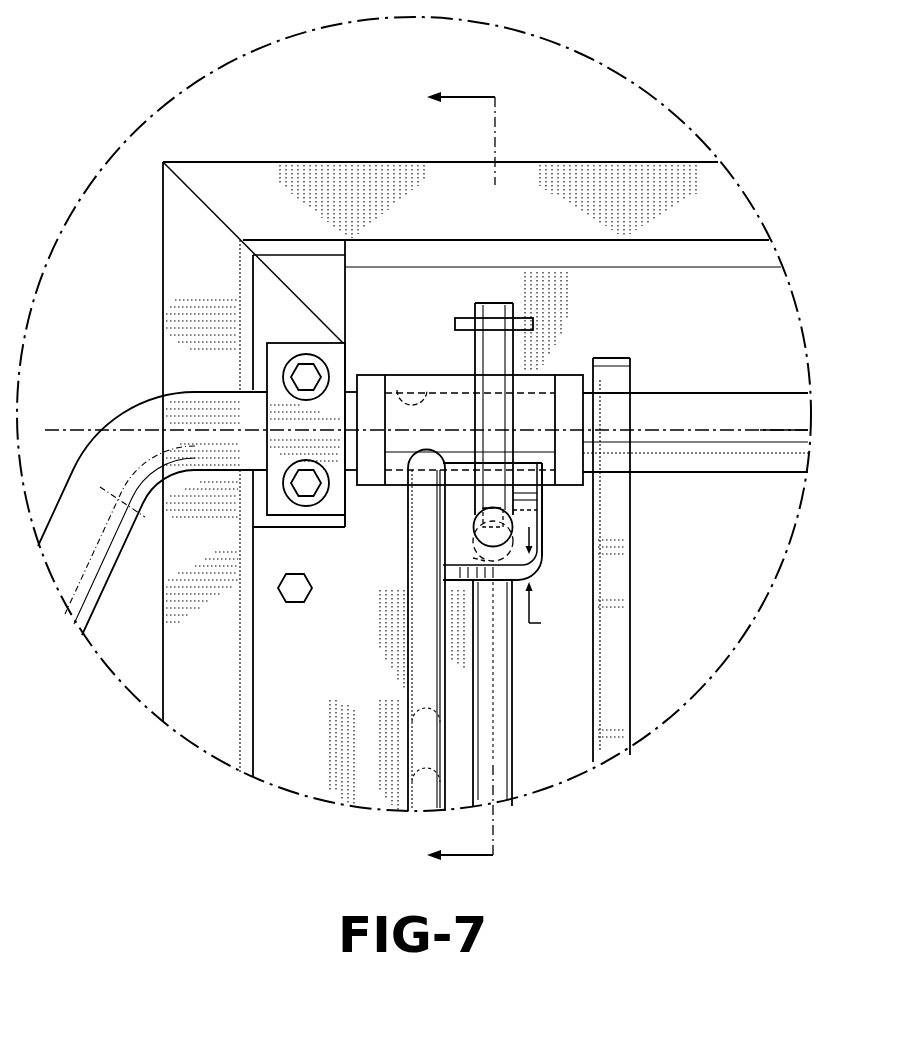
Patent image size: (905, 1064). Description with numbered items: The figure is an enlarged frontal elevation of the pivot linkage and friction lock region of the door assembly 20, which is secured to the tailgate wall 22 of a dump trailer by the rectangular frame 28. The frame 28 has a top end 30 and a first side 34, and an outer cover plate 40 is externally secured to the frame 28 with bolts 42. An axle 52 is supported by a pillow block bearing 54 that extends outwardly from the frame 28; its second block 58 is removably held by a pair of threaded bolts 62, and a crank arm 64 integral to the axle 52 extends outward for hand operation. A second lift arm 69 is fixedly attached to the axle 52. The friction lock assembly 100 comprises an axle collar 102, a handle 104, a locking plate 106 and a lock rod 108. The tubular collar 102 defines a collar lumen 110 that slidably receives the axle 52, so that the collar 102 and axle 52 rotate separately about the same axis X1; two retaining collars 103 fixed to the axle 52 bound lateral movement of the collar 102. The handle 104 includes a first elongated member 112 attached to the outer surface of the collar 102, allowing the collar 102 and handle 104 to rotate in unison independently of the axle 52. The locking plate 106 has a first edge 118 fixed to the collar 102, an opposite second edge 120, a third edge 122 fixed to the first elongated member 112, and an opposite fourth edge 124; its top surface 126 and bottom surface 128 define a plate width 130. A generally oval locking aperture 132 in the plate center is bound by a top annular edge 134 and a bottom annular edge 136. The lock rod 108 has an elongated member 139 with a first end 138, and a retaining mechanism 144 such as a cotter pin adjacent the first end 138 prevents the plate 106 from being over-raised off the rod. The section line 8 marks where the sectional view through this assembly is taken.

The door assembly 20 is at (263, 133).
The tailgate wall 22 is at (303, 104).
The section line 8- 8 is at (449, 478).
The top end 30 is at (529, 165).
The first side 34 is at (163, 281).
The frame 28 is at (158, 343).
The pillow block bearing 54 is at (288, 342).
The second block 58 is at (275, 492).
The threaded bolts 62 is at (296, 373).
The bolts 42 is at (302, 596).
The crank arm 64 is at (108, 567).
The axle 52 is at (708, 393).
The axis X1 is at (770, 430).
The axle collar 102 is at (530, 374).
The retaining collars 103 is at (376, 375).
The collar lumen 110 is at (425, 372).
The retaining mechanism 144 is at (466, 318).
The first end 138 is at (497, 298).
The elongated member 139 is at (500, 712).
The friction lock assembly 100 is at (556, 547).
The first edge 118 is at (460, 462).
The locking plate 106 is at (560, 574).
The bottom surface 128 is at (490, 587).
The third edge 122 is at (443, 522).
The second edge 120 is at (460, 573).
The locking aperture 132 is at (468, 537).
The bottom annular edge 136 is at (470, 558).
The top surface 126 is at (457, 502).
The fourth edge 124 is at (518, 494).
The top annular edge 134 is at (540, 510).
The plate width 130 is at (555, 581).
The first elongated member 112 is at (420, 687).
The handle 104 is at (402, 742).
The lock rod 108 is at (522, 668).
The second lift arm 69 is at (618, 637).
The outer cover plate 40 is at (733, 515).